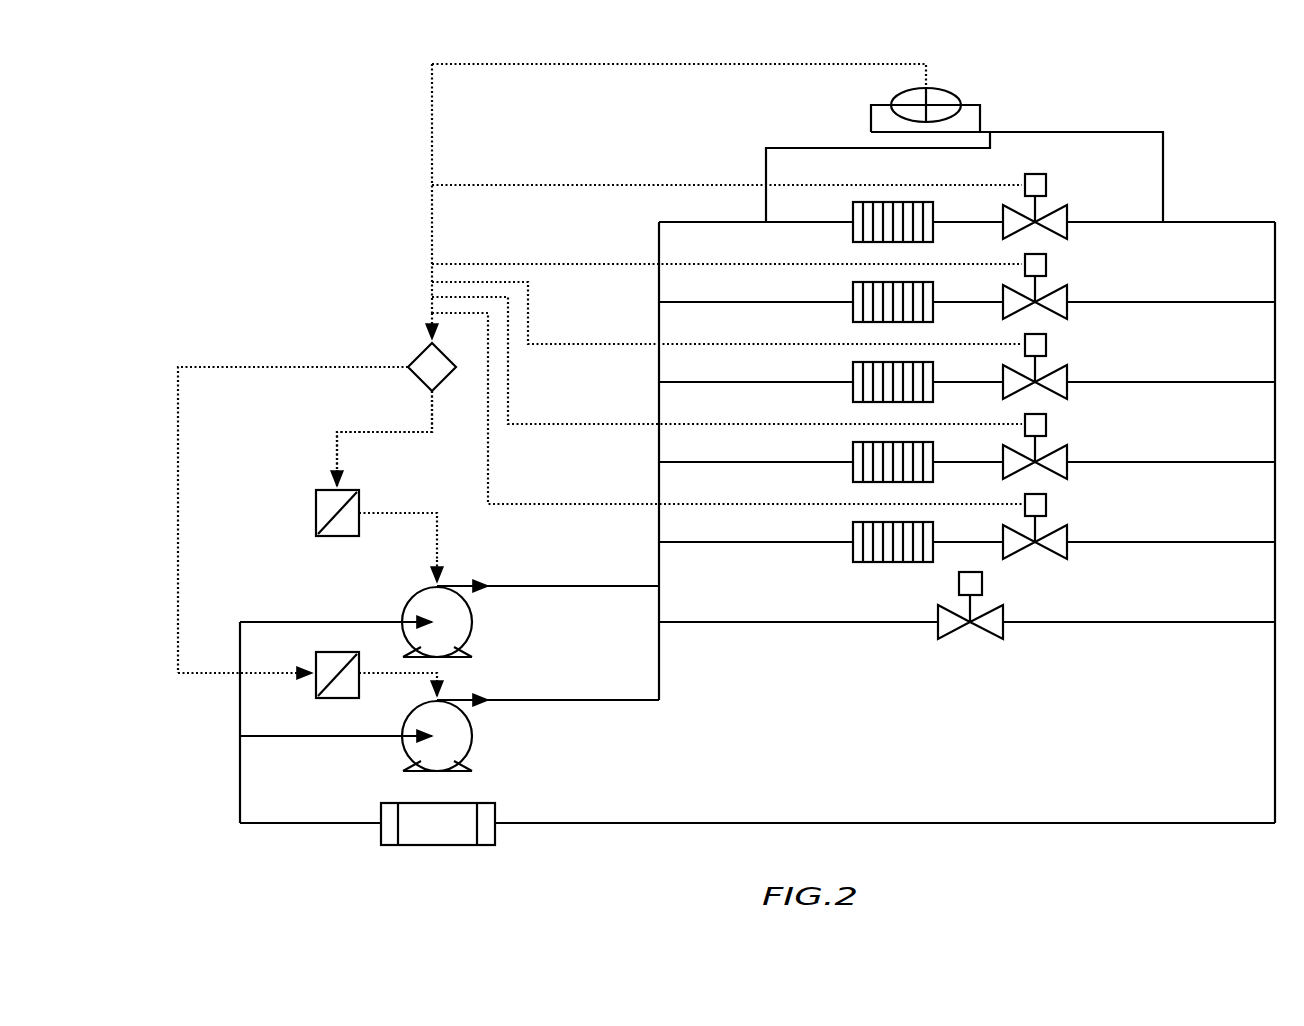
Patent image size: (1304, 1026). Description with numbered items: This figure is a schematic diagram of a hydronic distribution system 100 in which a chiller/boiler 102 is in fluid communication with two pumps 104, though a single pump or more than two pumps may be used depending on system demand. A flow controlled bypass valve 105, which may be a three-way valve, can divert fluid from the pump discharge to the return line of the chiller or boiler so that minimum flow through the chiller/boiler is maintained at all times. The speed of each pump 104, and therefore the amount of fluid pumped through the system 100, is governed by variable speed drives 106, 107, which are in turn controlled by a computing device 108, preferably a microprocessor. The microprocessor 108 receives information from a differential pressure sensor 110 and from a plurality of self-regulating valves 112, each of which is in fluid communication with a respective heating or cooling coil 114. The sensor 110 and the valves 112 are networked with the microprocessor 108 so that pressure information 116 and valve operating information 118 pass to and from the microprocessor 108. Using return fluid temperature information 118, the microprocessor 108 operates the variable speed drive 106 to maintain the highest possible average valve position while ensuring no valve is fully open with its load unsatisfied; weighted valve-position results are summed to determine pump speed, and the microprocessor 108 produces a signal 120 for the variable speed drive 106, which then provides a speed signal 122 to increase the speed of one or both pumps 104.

The hydronic distribution system 100 is at (246, 196).
The chiller/boiler 102 is at (408, 803).
The pump 104 is at (472, 620).
The flow controlled bypass valve 105 is at (1003, 628).
The variable speed drive 106 is at (316, 508).
The variable speed drive 107 is at (316, 685).
The computing device 108 is at (420, 352).
The differential pressure sensor 110 is at (948, 90).
The self-regulating valve 112 is at (1067, 230).
The heating or cooling coil 114 is at (853, 230).
The pressure information 116 is at (635, 64).
The valve operating information 118 is at (582, 185).
The signal 120 is at (337, 452).
The speed signal 122 is at (440, 545).